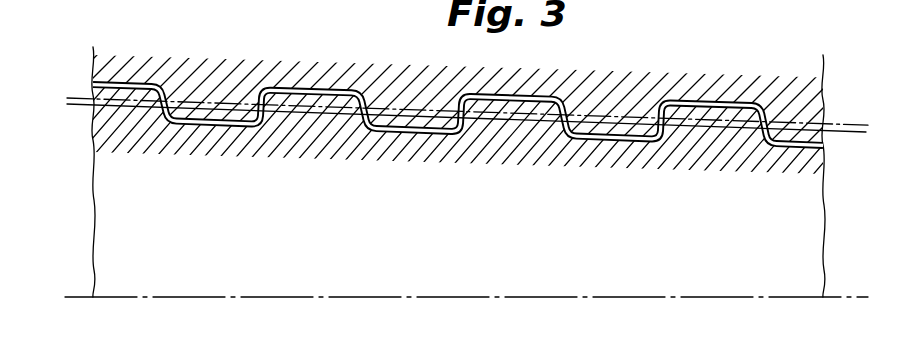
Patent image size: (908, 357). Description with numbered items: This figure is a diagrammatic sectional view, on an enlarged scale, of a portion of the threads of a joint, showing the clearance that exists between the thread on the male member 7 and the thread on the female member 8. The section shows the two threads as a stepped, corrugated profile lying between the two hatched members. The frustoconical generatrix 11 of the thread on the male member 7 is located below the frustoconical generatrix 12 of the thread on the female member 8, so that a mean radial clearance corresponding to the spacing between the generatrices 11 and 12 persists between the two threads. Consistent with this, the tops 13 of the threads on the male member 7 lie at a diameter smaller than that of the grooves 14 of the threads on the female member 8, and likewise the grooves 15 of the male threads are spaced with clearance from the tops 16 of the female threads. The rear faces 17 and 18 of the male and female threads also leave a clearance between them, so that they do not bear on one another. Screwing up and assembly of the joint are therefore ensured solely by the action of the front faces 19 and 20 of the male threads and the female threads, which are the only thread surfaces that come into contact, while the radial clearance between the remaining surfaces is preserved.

The male member 7 is at (514, 143).
The female member 8 is at (614, 100).
The frustoconical generatrix of the male thread 11 is at (866, 133).
The frustoconical generatrix of the female thread 12 is at (864, 124).
The tops of the male threads 13 is at (306, 90).
The grooves of the female threads 14 is at (324, 88).
The grooves of the male threads 15 is at (411, 138).
The tops of the female threads 16 is at (428, 118).
The rear face of the male thread 17 is at (362, 128).
The rear face of the female thread 18 is at (370, 95).
The front face of the male thread 19 is at (260, 110).
The front face of the female thread 20 is at (258, 107).